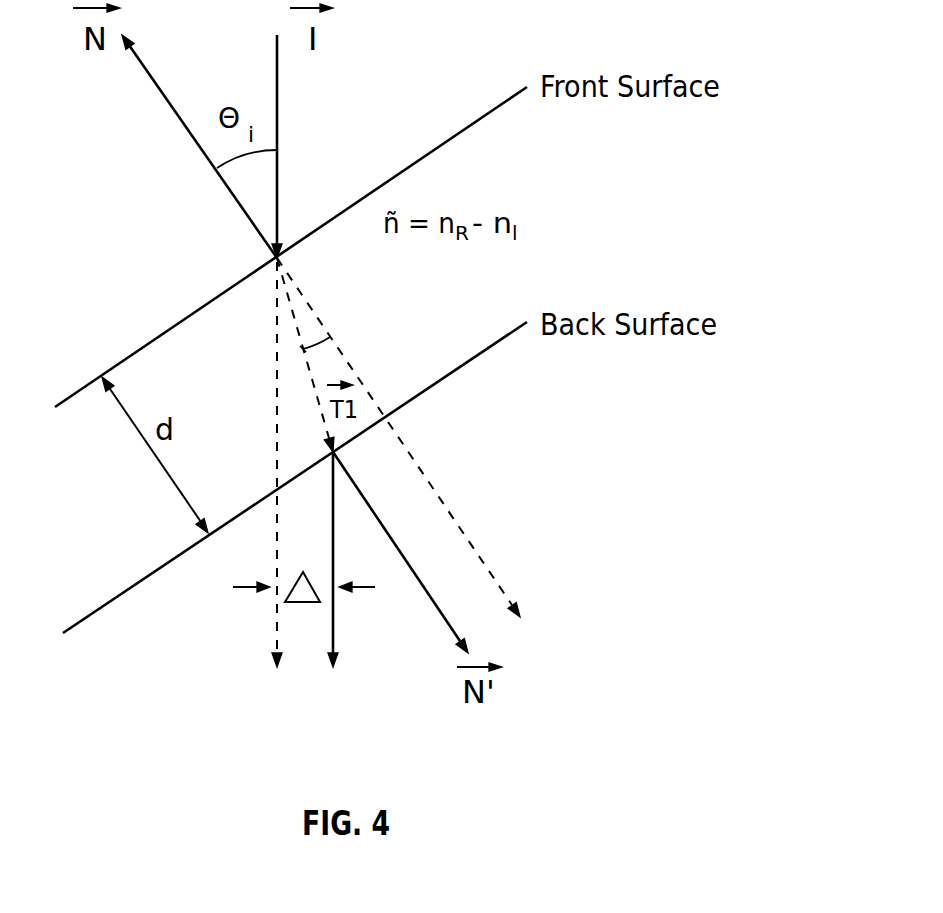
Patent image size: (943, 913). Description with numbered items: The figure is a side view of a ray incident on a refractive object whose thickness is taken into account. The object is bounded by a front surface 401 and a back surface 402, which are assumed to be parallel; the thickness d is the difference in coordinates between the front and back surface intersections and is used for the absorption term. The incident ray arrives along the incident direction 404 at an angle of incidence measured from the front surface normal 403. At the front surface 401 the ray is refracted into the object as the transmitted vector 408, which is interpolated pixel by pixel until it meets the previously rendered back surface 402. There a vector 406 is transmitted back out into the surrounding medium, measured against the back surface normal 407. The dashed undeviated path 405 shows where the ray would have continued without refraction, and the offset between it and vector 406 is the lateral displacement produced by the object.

The front surface 401 is at (133, 348).
The back surface 402 is at (127, 587).
The front surface normal N 403 is at (188, 135).
The incident light beam I 404 is at (278, 132).
The undeviated beam path 405 is at (270, 630).
The vector transmitted back into the surrounding medium 406 is at (333, 622).
The back surface normal N' 407 is at (412, 567).
The transmitted vector 408 is at (330, 340).